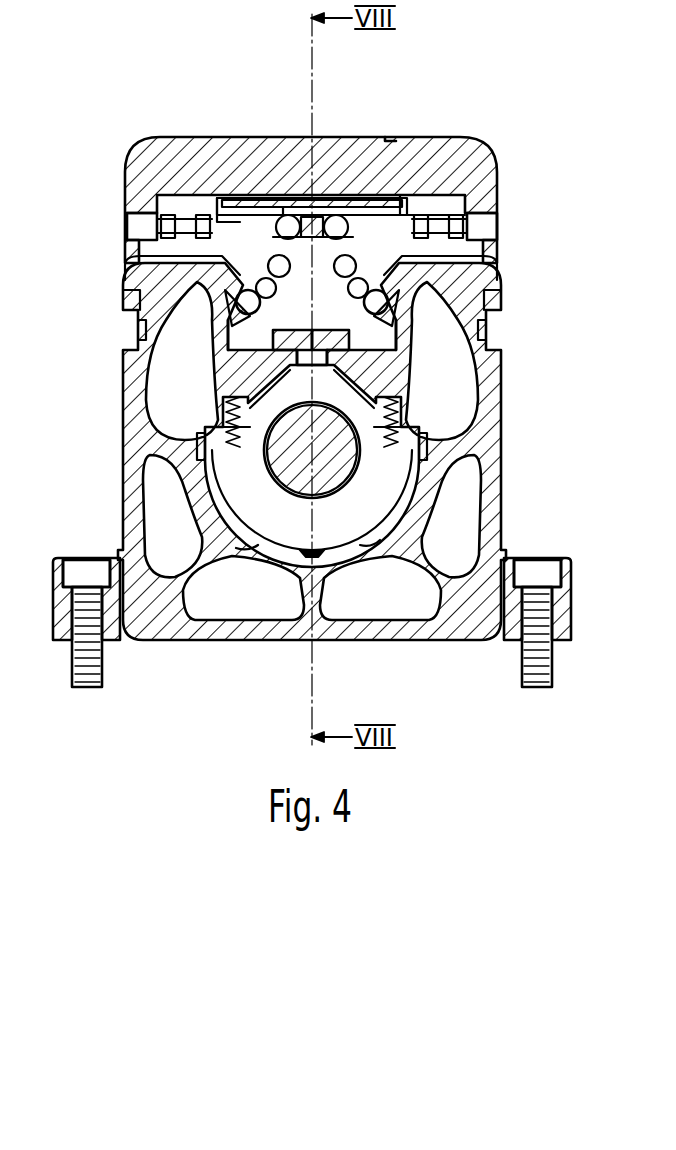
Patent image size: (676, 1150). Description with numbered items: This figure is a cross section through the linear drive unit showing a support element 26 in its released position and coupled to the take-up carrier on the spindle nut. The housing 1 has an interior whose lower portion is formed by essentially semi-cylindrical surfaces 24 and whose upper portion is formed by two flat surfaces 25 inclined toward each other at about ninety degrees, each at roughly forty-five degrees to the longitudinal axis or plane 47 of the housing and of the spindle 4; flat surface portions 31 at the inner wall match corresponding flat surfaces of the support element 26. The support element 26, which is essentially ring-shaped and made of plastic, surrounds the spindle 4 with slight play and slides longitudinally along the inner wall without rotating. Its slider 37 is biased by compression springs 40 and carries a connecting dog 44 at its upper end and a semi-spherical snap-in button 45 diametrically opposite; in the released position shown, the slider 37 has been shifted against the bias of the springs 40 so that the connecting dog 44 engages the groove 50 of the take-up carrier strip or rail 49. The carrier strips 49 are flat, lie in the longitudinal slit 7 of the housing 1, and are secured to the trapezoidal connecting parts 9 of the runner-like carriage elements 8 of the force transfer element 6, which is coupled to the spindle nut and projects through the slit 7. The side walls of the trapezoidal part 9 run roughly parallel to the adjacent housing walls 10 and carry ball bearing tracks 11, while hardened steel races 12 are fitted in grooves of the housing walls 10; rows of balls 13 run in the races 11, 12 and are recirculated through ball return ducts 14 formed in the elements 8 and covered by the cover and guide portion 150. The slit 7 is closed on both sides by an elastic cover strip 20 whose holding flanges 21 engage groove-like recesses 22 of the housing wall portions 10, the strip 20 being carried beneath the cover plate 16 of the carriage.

The housing 1 is at (493, 438).
The spindle 4 is at (333, 478).
The force transfer element 6 is at (396, 143).
The longitudinal slit 7 is at (480, 332).
The runner-like elements 8 is at (485, 200).
The connecting path 9 is at (328, 286).
The housing walls 10 is at (222, 367).
The ball bearing tracks 11 is at (248, 292).
The ball races 12 is at (138, 322).
The row of balls 13 is at (125, 290).
The ball return ducts 14 is at (268, 195).
The cover plate 16 is at (333, 138).
The cover strip 20 is at (284, 200).
The holding flanges 21 is at (437, 203).
The groove-like recesses 22 is at (470, 225).
The semi-cylindrical surfaces 24 is at (375, 540).
The flat surfaces 25 is at (203, 410).
The support element 26 is at (380, 388).
The flat surface portions 31 is at (215, 448).
The slider 37 is at (247, 530).
The compression springs 40 is at (250, 437).
The connecting dog 44 is at (315, 360).
The snap-in button projection 45 is at (297, 548).
The longitudinal axis 47 is at (310, 678).
The take-up carrier strips 49 is at (278, 333).
The groove 50 is at (322, 333).
The cover and guide portion 150 is at (187, 220).